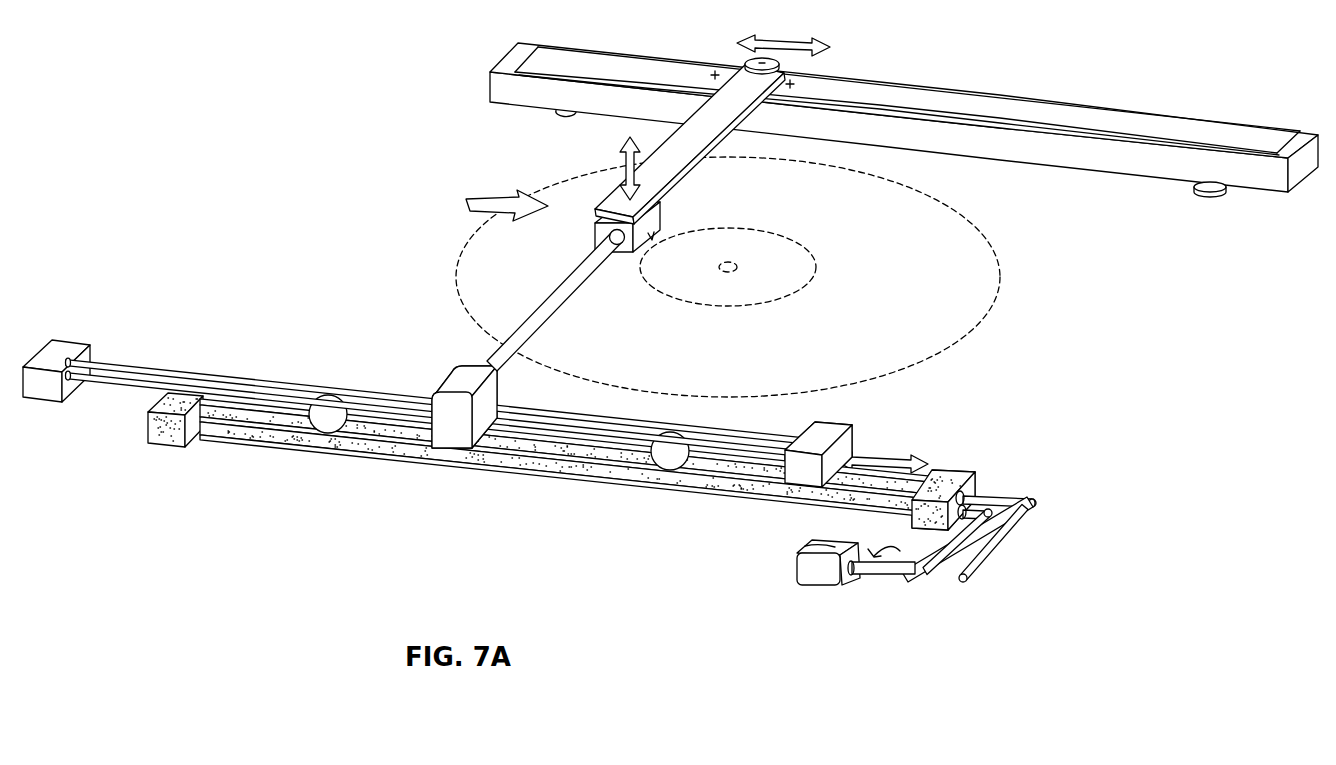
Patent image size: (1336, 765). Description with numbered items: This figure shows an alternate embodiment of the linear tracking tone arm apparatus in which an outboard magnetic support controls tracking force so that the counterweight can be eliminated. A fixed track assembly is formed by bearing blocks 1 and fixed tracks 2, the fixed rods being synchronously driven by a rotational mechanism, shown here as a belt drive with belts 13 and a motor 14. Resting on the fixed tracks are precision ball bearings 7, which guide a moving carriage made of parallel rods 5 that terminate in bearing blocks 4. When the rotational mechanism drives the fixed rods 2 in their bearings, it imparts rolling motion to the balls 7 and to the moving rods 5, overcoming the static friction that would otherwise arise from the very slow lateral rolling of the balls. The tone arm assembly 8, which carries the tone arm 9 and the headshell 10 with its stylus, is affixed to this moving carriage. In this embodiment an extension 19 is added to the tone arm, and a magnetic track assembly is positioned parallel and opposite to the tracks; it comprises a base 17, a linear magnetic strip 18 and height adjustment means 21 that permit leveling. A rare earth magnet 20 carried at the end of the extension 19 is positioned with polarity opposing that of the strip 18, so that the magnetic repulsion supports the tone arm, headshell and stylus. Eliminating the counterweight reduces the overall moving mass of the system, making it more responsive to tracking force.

The bearing block 1 is at (167, 435).
The fixed track 2 is at (545, 468).
The bearing block 4 is at (62, 350).
The parallel rod 5 is at (195, 373).
The precision ball bearing 7 is at (327, 420).
The tone arm assembly 8 is at (466, 372).
The tone arm 9 is at (543, 318).
The headshell 10 is at (592, 222).
The belt 13 is at (998, 522).
The motor 14 is at (812, 573).
The base 17 is at (1058, 152).
The linear magnetic strip 18 is at (1130, 125).
The extension 19 is at (703, 128).
The rare earth magnet 20 is at (778, 82).
The height adjustment means 21 is at (563, 112).